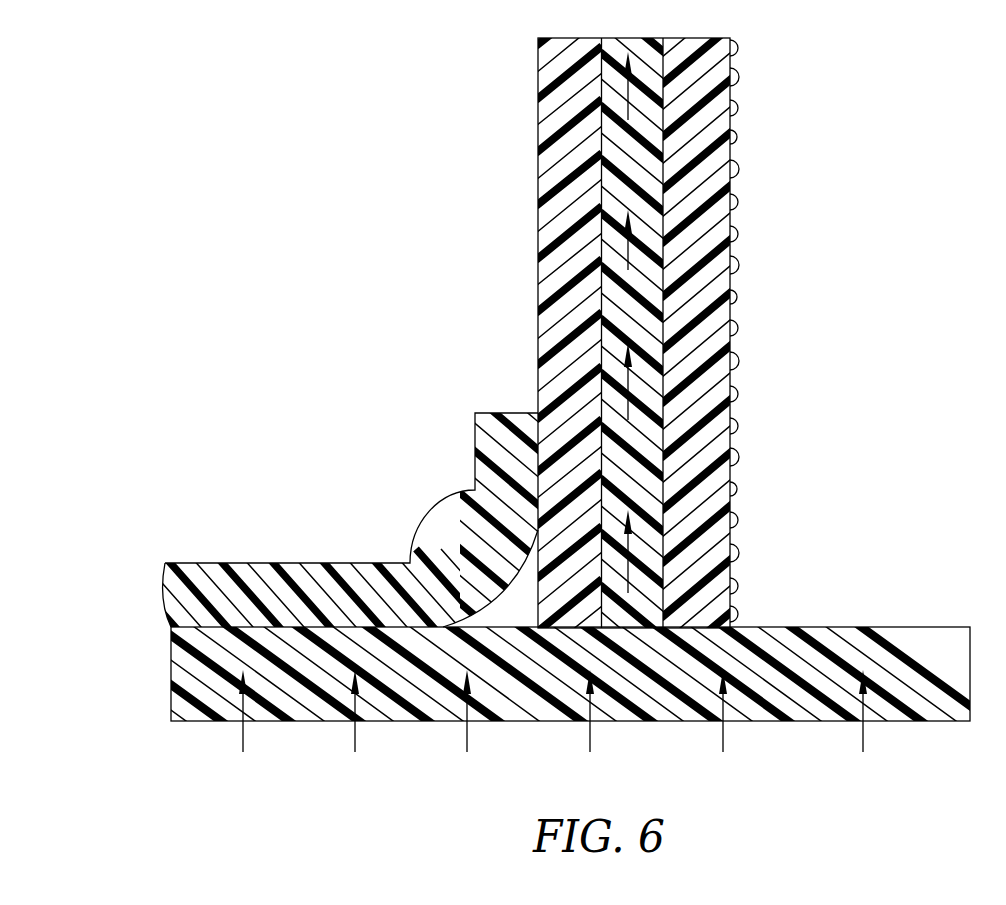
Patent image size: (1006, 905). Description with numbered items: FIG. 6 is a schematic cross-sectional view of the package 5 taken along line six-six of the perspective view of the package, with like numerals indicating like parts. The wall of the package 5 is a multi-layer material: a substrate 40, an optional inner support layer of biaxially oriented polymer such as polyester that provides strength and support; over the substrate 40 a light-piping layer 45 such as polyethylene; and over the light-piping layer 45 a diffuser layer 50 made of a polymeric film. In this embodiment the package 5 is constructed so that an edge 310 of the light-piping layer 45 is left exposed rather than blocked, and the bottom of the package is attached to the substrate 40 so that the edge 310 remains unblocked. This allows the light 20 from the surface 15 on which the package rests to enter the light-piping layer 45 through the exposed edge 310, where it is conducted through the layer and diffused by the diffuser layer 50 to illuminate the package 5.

The package 5 is at (810, 168).
The surface 15 is at (298, 720).
The light 20 is at (632, 582).
The substrate 40 is at (570, 268).
The light-piping layer 45 is at (655, 473).
The diffuser layer 50 is at (687, 288).
The edge 310 is at (492, 535).